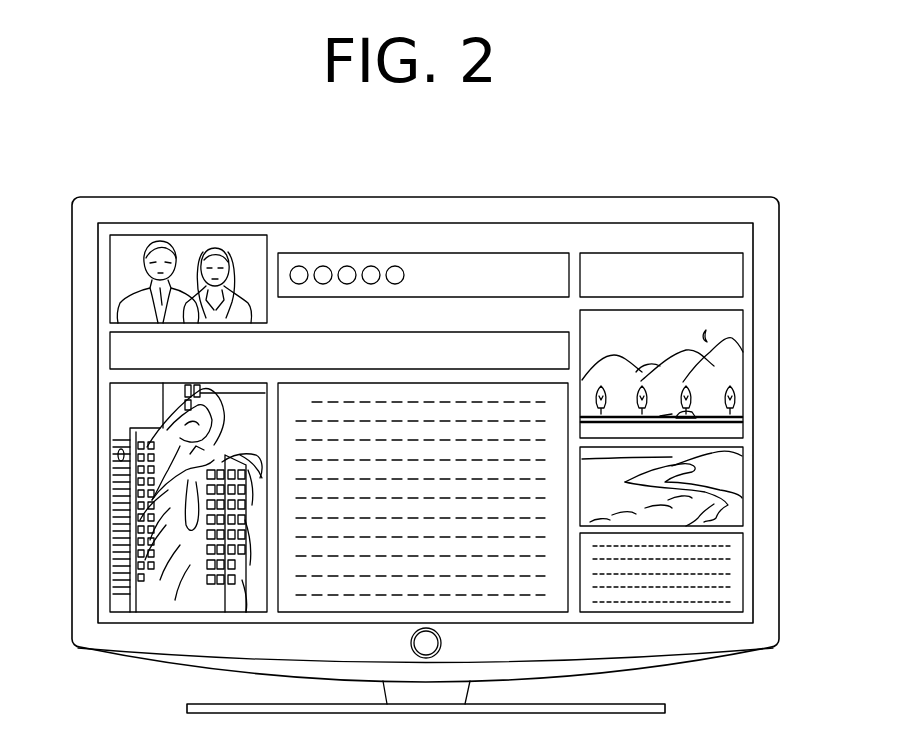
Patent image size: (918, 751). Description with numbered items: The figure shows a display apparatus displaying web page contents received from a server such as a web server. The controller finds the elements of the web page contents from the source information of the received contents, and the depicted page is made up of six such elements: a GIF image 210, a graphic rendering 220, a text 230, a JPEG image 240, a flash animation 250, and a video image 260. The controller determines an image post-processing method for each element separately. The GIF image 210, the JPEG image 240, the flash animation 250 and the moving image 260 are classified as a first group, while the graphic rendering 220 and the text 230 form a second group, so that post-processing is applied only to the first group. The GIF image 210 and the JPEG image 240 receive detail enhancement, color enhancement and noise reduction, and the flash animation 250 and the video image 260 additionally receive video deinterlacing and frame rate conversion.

The GIF image 210 is at (197, 235).
The graphic rendering 220 is at (320, 253).
The text 230 is at (280, 507).
The JPEG image 240 is at (743, 484).
The flash animation 250 is at (743, 372).
The video image 260 is at (110, 404).